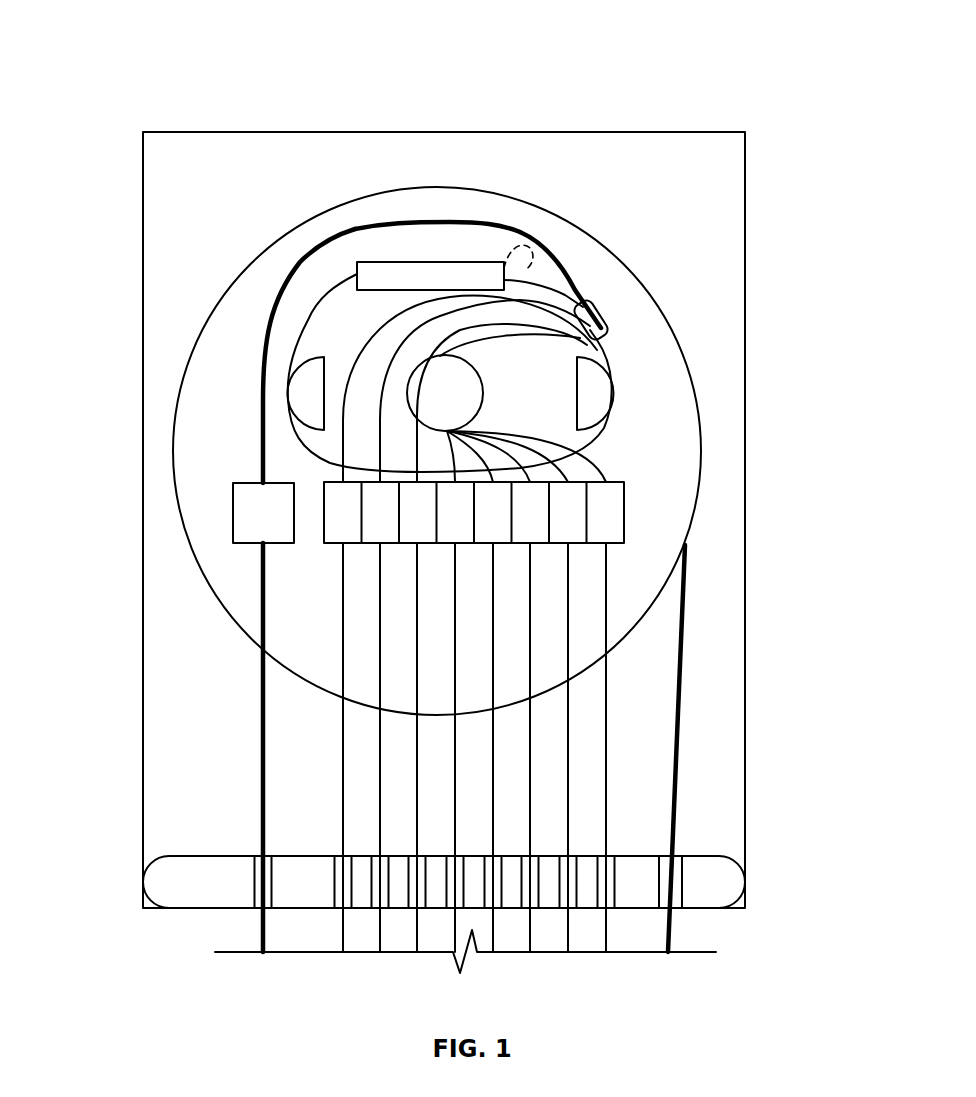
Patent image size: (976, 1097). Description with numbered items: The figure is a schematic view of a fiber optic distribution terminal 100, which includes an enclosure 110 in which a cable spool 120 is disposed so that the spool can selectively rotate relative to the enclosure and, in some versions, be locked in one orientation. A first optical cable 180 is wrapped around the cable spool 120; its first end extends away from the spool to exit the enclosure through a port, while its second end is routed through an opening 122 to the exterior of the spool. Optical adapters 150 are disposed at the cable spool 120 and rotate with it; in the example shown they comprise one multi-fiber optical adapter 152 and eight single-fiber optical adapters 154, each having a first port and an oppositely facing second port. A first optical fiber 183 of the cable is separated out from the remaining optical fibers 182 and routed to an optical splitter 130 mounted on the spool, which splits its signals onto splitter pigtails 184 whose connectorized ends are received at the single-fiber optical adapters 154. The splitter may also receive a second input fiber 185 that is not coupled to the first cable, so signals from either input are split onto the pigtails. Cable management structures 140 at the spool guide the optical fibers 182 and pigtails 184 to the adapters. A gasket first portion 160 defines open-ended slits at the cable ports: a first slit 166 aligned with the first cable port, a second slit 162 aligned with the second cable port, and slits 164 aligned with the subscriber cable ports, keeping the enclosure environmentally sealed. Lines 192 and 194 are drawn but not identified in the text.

The fiber optic distribution terminal 100 is at (120, 50).
The enclosure 110 is at (745, 218).
The cable spool 120 is at (700, 388).
The opening 122 is at (607, 308).
The optical splitter 130 is at (390, 283).
The cable management structures 140 is at (422, 405).
The optical adapters 150 is at (667, 522).
The multi-fiber optical adapter 152 is at (286, 522).
The single-fiber optical adapters 154 is at (612, 503).
The first portion of the gasket 160 is at (713, 865).
The second slit 162 is at (277, 888).
The slits 164 is at (455, 890).
The first slit 166 is at (682, 890).
The first optical cable 180 is at (680, 643).
The optical fibers 182 is at (403, 220).
The first optical fiber 183 is at (535, 278).
The splitter pigtails 184 is at (312, 325).
The second input fiber 185 is at (525, 263).
The left conductor 192 is at (260, 725).
The conductors 194 is at (340, 733).